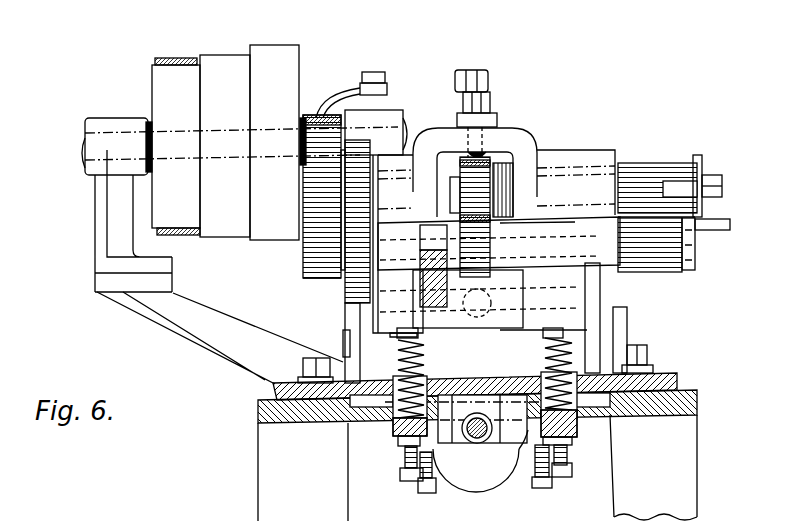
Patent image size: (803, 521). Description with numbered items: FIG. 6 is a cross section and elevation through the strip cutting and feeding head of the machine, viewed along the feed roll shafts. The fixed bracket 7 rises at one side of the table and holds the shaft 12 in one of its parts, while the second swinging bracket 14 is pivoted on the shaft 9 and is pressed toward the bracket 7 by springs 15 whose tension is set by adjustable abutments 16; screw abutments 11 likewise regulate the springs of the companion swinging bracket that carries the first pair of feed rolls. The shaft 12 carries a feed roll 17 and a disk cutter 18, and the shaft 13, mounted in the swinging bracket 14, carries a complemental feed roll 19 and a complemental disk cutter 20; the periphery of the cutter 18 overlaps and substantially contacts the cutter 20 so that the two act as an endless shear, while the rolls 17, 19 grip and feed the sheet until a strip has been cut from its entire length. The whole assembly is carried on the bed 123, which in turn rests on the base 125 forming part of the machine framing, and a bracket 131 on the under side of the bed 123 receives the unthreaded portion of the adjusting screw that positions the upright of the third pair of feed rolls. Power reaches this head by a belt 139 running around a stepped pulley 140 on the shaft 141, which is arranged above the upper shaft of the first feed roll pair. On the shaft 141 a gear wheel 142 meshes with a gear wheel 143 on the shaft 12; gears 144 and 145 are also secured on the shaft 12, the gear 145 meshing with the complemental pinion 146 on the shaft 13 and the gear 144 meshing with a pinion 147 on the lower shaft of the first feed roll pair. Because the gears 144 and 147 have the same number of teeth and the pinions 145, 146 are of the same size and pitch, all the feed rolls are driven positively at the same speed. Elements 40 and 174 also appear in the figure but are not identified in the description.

The fixed bracket 7 is at (512, 126).
The shaft 9 is at (627, 337).
The screw abutments 11 is at (483, 377).
The shaft 12 is at (585, 175).
The shaft 13 is at (640, 275).
The second swinging bracket 14 is at (418, 296).
The springs 15 is at (395, 430).
The adjustable abutments 16 is at (400, 473).
The feed roll 17 is at (642, 163).
The disk cutter 18 is at (697, 155).
The complemental feed roll 19 is at (665, 273).
The complemental disk cutter 20 is at (687, 270).
The drum 40 is at (496, 482).
The bed 123 is at (680, 372).
The base 125 is at (665, 415).
The bracket 131 is at (480, 455).
The belt 139 is at (157, 63).
The stepped pulley 140 is at (213, 55).
The shaft 141 is at (83, 143).
The gear wheel 142 is at (321, 113).
The gear wheel 143 is at (308, 270).
The gear 144 is at (397, 117).
The gear 145 is at (535, 128).
The pinion 146 is at (507, 248).
The pinion 147 is at (350, 297).
The conduit 174 is at (383, 72).